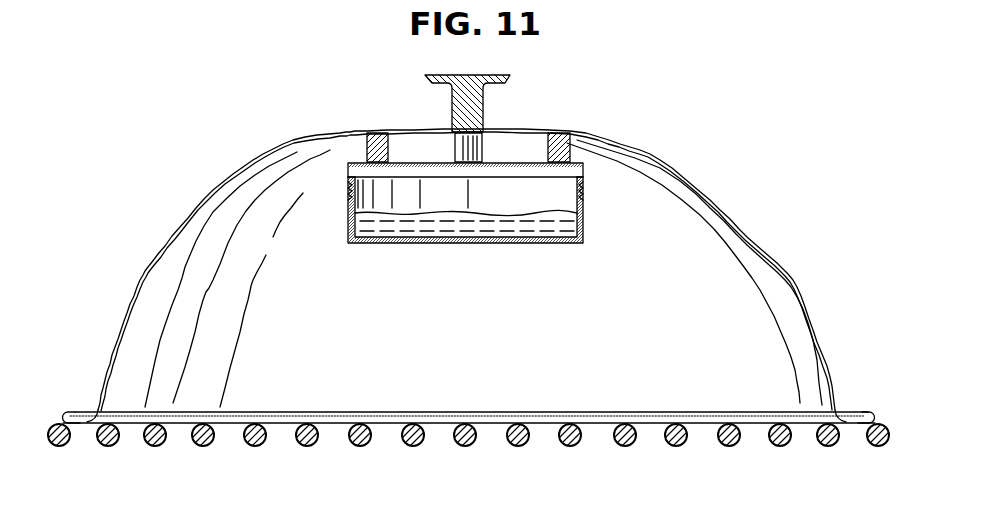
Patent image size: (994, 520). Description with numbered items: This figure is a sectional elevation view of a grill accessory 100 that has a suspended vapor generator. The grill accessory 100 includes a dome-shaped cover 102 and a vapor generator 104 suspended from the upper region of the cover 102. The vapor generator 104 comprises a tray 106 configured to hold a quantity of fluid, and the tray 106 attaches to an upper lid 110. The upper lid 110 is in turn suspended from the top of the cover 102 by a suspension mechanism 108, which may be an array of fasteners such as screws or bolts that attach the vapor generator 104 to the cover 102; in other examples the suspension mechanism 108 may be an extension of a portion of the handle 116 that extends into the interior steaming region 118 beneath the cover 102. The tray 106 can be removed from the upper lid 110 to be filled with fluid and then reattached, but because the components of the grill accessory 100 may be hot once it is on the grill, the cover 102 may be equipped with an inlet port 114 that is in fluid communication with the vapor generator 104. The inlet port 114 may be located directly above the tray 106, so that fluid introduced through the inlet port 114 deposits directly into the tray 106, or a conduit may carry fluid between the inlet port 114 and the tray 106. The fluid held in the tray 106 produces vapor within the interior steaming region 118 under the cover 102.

The grill accessory 100 is at (665, 110).
The cover 102 is at (787, 268).
The vapor generator 104 is at (335, 154).
The tray 106 is at (582, 210).
The suspension mechanism 108 is at (362, 154).
The upper lid 110 is at (525, 160).
The inlet port 114 is at (407, 130).
The handle 116 is at (502, 77).
The interior steaming region 118 is at (291, 398).